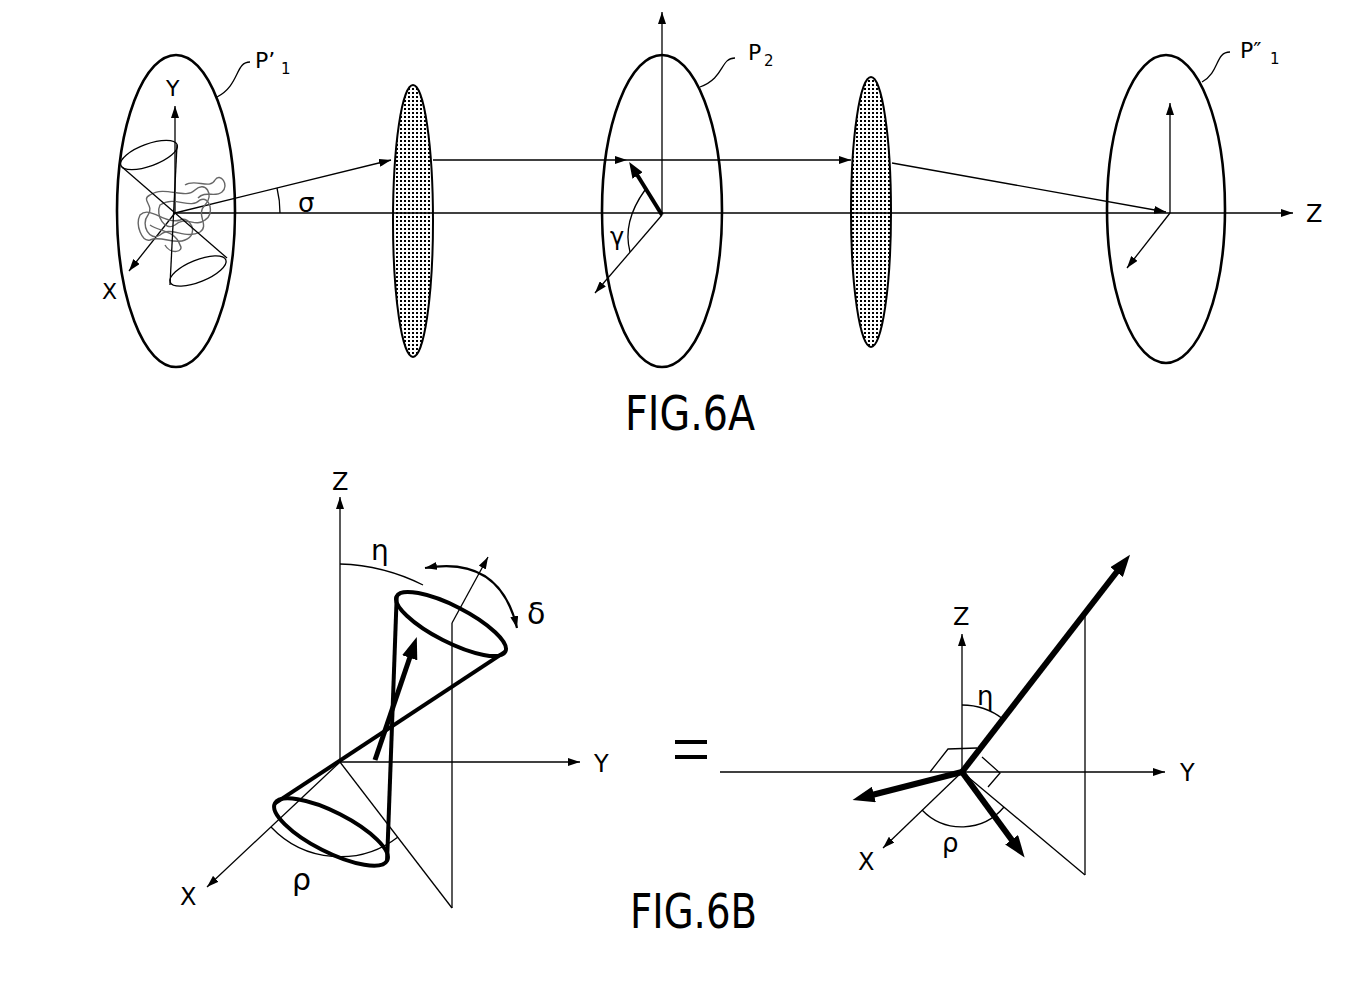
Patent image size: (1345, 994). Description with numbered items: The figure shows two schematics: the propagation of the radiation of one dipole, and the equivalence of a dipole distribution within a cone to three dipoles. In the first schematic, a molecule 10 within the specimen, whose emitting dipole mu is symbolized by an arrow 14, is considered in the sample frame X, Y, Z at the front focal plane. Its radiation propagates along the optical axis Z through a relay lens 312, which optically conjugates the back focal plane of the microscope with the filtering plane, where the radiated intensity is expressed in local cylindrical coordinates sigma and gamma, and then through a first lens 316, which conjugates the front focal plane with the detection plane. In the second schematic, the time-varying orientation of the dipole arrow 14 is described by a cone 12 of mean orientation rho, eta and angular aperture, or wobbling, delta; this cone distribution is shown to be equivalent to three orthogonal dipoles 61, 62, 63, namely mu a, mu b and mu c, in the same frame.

In FIG. 6A, the molecule 10 is at (153, 181).
In FIG. 6A, the arrow 14 is at (187, 176).
In FIG. 6B, the arrow 14 is at (397, 652).
In FIG. 6A, the relay lens 312 is at (425, 107).
In FIG. 6A, the first lens 316 is at (886, 107).
In FIG. 6B, the cone 12 is at (480, 672).
In FIG. 6B, the orthogonal dipole 61 is at (1098, 608).
In FIG. 6B, the orthogonal dipole 62 is at (893, 773).
In FIG. 6B, the orthogonal dipole 63 is at (993, 803).